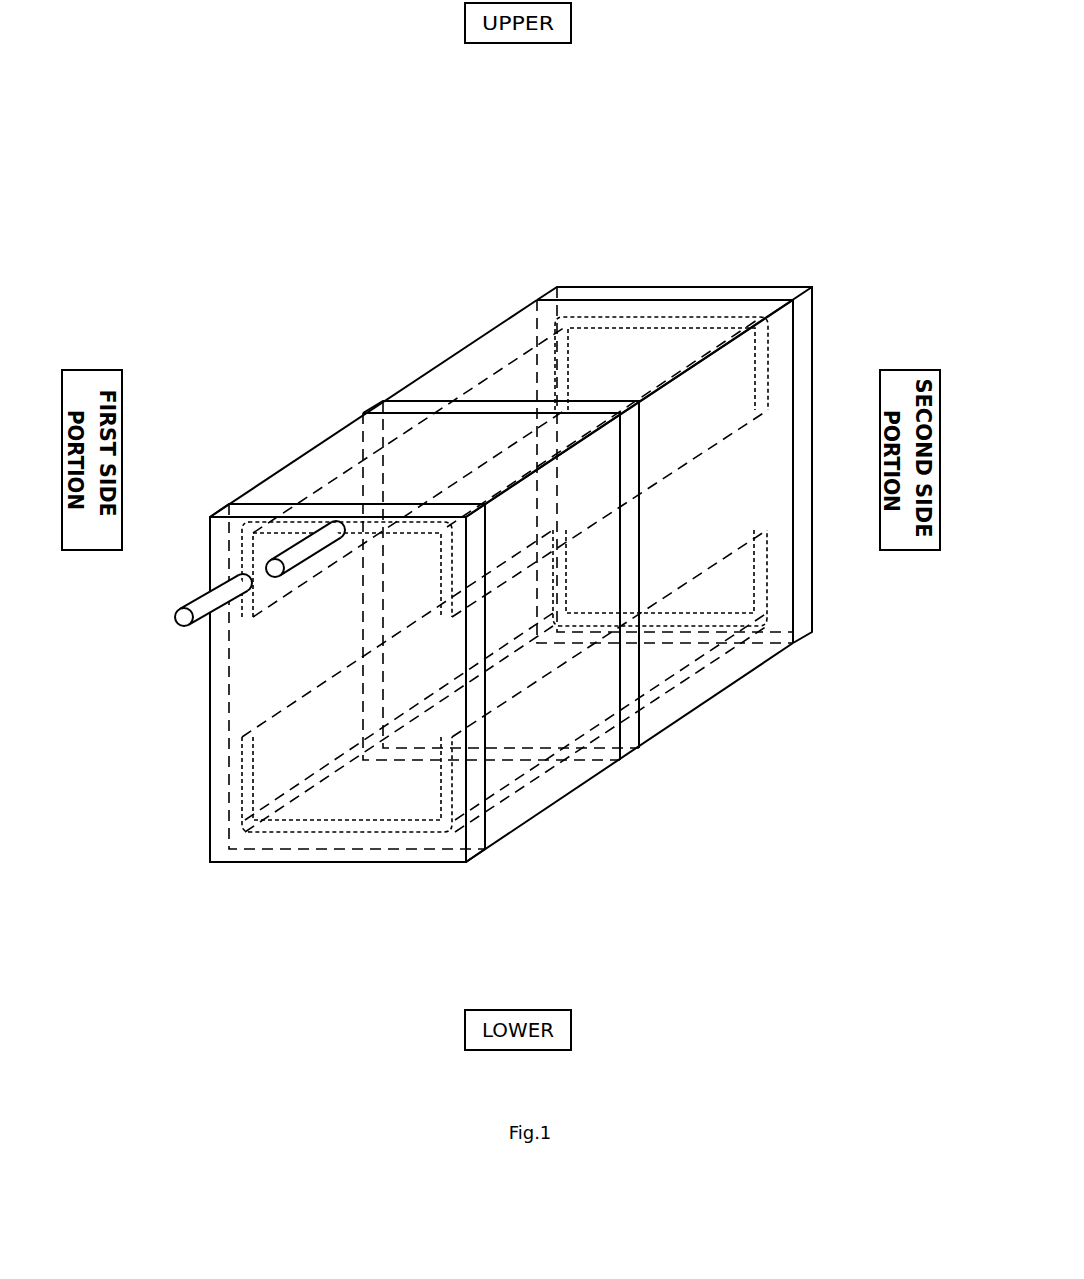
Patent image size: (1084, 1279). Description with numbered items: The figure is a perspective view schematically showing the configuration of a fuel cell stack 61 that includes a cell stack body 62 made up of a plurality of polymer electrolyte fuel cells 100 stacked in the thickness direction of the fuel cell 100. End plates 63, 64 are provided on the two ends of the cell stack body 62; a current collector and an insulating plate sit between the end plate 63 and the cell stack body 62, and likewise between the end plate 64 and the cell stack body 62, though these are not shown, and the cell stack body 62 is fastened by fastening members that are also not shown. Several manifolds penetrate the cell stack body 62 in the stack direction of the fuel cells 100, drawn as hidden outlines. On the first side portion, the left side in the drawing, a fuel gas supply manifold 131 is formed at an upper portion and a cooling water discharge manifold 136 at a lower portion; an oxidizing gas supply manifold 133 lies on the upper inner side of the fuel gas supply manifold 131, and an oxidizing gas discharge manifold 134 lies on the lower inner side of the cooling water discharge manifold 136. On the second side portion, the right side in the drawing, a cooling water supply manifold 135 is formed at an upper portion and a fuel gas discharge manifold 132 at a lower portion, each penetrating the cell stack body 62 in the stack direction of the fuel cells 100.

The fuel cell stack 61 is at (415, 189).
The cell stack body 62 is at (722, 697).
The end plate 63 is at (238, 507).
The end plate 64 is at (573, 294).
The fuel cell 100 is at (399, 408).
The fuel gas supply manifold 131 is at (228, 637).
The fuel gas discharge manifold 132 is at (445, 832).
The oxidizing gas supply manifold 133 is at (627, 314).
The oxidizing gas discharge manifold 134 is at (327, 830).
The cooling water supply manifold 135 is at (770, 355).
The cooling water discharge manifold 136 is at (237, 866).